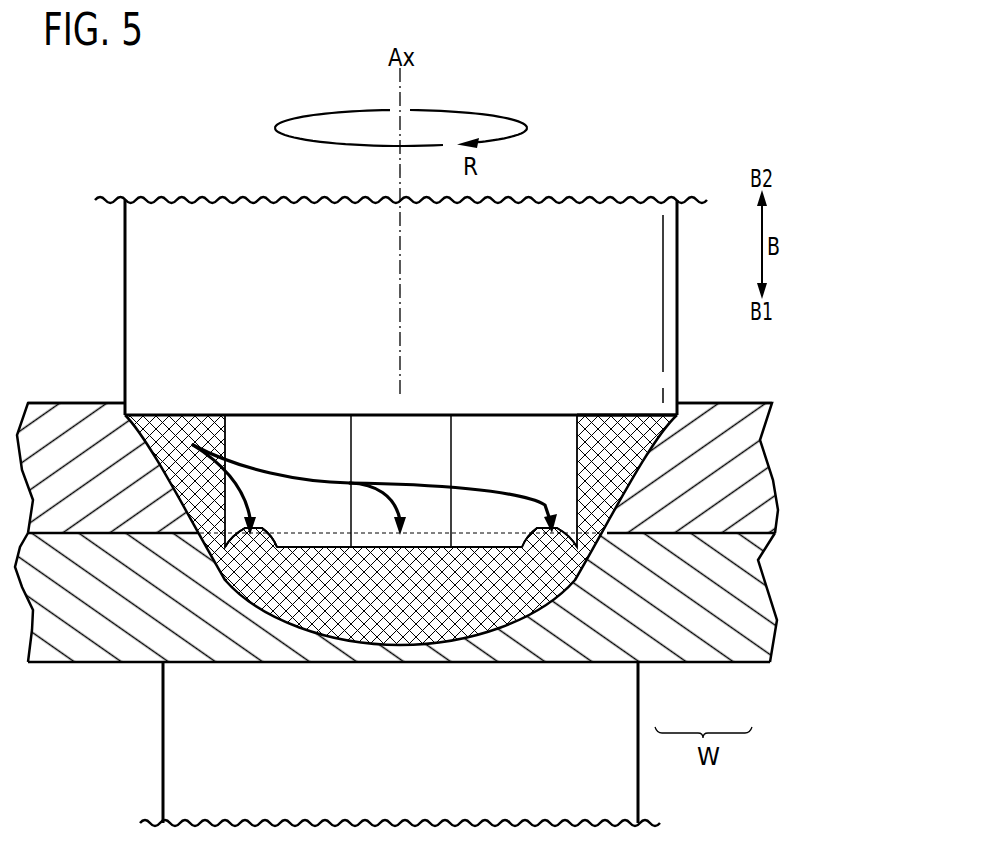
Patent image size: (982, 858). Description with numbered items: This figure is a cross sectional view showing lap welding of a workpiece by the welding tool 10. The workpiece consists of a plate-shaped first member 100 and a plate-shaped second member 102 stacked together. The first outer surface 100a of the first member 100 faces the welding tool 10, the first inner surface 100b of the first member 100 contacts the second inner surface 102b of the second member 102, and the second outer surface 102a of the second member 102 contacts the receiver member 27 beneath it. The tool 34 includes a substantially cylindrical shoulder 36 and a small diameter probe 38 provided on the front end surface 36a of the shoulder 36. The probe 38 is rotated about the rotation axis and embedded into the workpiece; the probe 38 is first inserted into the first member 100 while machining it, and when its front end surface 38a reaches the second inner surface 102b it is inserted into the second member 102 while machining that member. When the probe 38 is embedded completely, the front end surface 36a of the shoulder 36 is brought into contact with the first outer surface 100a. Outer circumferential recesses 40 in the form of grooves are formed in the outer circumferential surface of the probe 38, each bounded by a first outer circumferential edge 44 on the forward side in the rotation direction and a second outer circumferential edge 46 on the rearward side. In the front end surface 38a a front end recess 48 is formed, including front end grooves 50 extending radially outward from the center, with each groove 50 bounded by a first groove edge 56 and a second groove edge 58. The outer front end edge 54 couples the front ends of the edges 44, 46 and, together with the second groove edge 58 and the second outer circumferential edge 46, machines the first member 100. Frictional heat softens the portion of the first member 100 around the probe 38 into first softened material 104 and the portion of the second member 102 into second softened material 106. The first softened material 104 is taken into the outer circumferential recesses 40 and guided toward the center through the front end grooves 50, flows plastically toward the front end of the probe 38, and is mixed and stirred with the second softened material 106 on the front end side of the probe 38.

The welding tool 10 is at (396, 273).
The tool 34 is at (396, 327).
The shoulder 36 is at (150, 265).
The front end surface of the shoulder 36a is at (640, 418).
The outer circumferential recess 40 is at (400, 307).
The first outer circumferential edge 44 is at (352, 442).
The second outer circumferential edge 46 is at (451, 443).
The probe 38 is at (379, 558).
The front end surface of the probe 38a is at (502, 548).
The front end recess 48 is at (541, 528).
The front end groove 50 is at (268, 535).
The outer front end edge 54 is at (367, 548).
The first groove edge 56 is at (233, 540).
The second groove edge 58 is at (282, 550).
The first softened material 104 is at (198, 432).
The second softened material 106 is at (453, 620).
The first member 100 is at (397, 523).
The first outer surface 100a is at (100, 403).
The first inner surface 100b is at (80, 533).
The second member 102 is at (396, 631).
The second outer surface 102a is at (72, 662).
The second inner surface 102b is at (160, 533).
The receiver member 27 is at (182, 775).